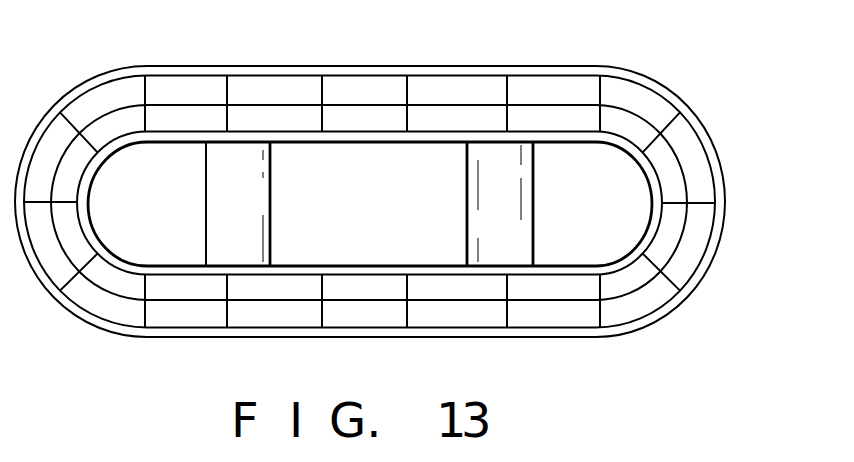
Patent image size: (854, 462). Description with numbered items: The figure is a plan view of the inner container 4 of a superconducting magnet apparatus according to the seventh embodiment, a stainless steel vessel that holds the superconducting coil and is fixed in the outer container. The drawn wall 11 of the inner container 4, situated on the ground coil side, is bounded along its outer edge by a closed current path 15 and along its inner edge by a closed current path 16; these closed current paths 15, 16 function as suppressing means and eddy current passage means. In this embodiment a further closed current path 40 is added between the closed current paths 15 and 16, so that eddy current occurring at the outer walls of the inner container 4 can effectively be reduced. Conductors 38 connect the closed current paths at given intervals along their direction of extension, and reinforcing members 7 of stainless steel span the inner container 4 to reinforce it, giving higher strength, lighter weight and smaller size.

The inner container 4 is at (548, 67).
The conductors 38 is at (672, 283).
The closed current path 40 is at (395, 230).
The closed current path 15 is at (583, 330).
The wall 11 is at (187, 310).
The closed current path 16 is at (552, 271).
The reinforcing members 7 is at (270, 240).